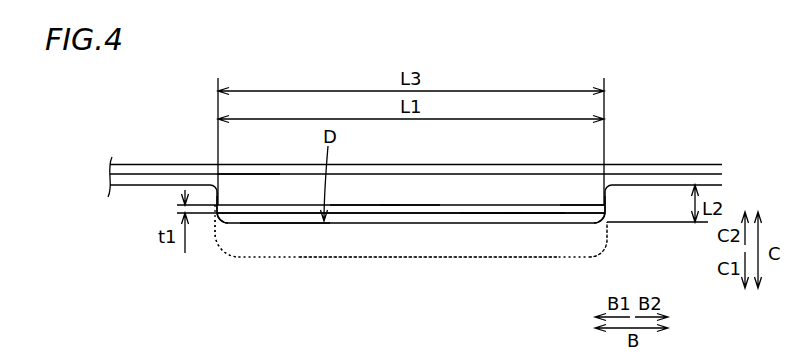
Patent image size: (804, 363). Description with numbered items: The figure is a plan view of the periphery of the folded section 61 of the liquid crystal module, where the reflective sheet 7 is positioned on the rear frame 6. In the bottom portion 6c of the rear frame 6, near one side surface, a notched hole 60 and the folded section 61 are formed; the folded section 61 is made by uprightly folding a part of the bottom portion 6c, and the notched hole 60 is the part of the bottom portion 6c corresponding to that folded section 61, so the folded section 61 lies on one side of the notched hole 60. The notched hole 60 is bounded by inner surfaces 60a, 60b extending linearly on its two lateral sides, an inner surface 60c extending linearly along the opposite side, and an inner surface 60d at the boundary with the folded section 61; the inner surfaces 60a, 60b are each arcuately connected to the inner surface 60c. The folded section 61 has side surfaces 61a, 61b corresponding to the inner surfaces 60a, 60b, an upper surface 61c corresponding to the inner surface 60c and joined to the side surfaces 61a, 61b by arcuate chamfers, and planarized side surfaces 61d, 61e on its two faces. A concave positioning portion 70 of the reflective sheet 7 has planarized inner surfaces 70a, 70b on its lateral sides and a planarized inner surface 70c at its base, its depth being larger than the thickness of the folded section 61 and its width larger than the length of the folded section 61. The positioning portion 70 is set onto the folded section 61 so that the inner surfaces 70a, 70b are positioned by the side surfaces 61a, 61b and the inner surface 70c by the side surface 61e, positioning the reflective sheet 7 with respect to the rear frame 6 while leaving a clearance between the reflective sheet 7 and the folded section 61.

The rear frame 6 is at (133, 170).
The bottom portion 6c is at (198, 183).
The reflective sheet 7 is at (647, 165).
The notched hole 60 is at (411, 266).
The inner surface 60a is at (238, 258).
The inner surface 60b is at (597, 250).
The inner surface 60c is at (447, 258).
The inner surface 60d is at (292, 223).
The folded section 61 is at (411, 214).
The side surface 61a is at (214, 213).
The side surface 61b is at (607, 206).
The upper surface 61c is at (366, 208).
The side surface 61d is at (412, 205).
The side surface 61e is at (535, 216).
The positioning portion 70 is at (411, 170).
The inner surface 70a is at (260, 165).
The inner surface 70b is at (602, 205).
The inner surface 70c is at (493, 216).